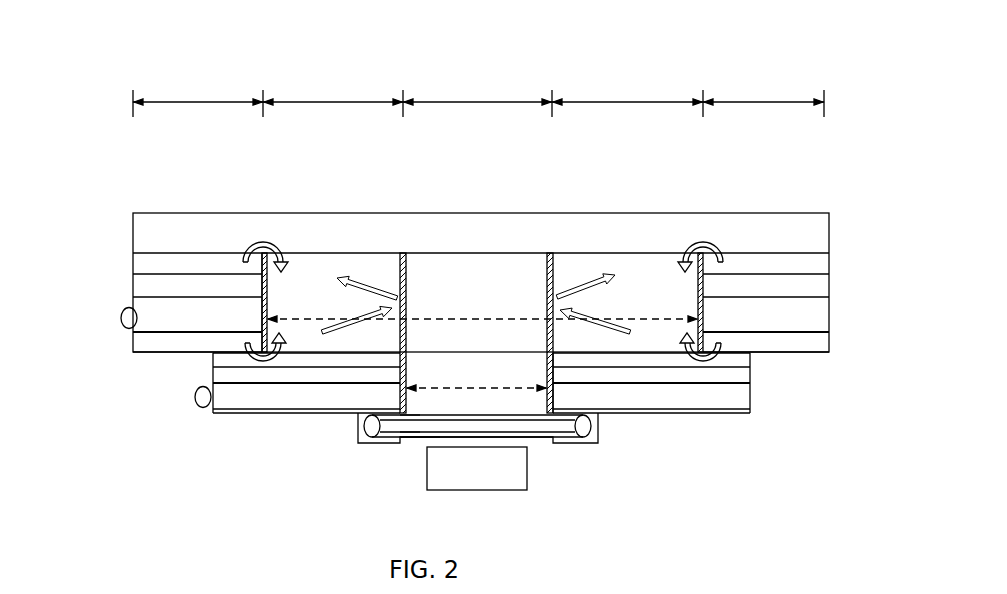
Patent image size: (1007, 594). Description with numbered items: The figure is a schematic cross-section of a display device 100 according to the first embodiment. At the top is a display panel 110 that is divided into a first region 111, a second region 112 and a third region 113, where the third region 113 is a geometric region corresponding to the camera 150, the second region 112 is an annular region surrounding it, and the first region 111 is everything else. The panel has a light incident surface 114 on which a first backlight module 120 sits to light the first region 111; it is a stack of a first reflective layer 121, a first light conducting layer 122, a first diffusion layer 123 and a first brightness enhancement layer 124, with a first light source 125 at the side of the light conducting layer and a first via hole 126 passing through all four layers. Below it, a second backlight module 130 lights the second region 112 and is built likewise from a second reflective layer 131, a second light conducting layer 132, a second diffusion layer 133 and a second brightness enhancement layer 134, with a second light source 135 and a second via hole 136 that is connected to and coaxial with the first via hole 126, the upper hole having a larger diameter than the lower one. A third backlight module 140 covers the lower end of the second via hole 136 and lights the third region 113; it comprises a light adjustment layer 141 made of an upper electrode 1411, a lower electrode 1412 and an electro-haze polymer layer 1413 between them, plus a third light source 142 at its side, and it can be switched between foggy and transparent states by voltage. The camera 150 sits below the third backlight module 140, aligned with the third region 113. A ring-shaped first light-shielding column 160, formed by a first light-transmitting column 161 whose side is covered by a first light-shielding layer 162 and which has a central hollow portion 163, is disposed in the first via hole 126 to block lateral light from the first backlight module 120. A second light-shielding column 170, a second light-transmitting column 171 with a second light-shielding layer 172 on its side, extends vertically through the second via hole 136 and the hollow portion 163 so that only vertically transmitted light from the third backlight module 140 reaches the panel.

The display device 100 is at (142, 29).
The display panel 110 is at (829, 235).
The first region 111 is at (478, 92).
The second region 112 is at (483, 92).
The third region 113 is at (477, 92).
The light incident surface 114 is at (808, 253).
The first backlight module 120 is at (52, 245).
The first reflective layer 121 is at (133, 344).
The first light conducting layer 122 is at (141, 302).
The first diffusion layer 123 is at (133, 286).
The first brightness enhancement layer 124 is at (133, 264).
The first light source 125 is at (122, 323).
The first via hole 126 is at (262, 285).
The second backlight module 130 is at (124, 372).
The second reflective layer 131 is at (237, 416).
The second light conducting layer 132 is at (218, 403).
The second diffusion layer 133 is at (213, 374).
The second brightness enhancement layer 134 is at (213, 360).
The second light source 135 is at (196, 404).
The second via hole 136 is at (556, 376).
The third backlight module 140 is at (272, 437).
The light adjustment layer 141 is at (323, 458).
The upper electrode 1411 is at (413, 417).
The lower electrode 1412 is at (427, 437).
The polymer layer 1413 is at (417, 428).
The third light source 142 is at (362, 426).
The camera 150 is at (527, 478).
The first light-shielding column 160 is at (290, 157).
The first light-transmitting column 161 is at (300, 280).
The first light-shielding layer 162 is at (263, 256).
The hollow portion 163 is at (399, 278).
The second light-shielding column 170 is at (525, 163).
The second light-transmitting column 171 is at (512, 262).
The second light-shielding layer 172 is at (403, 253).